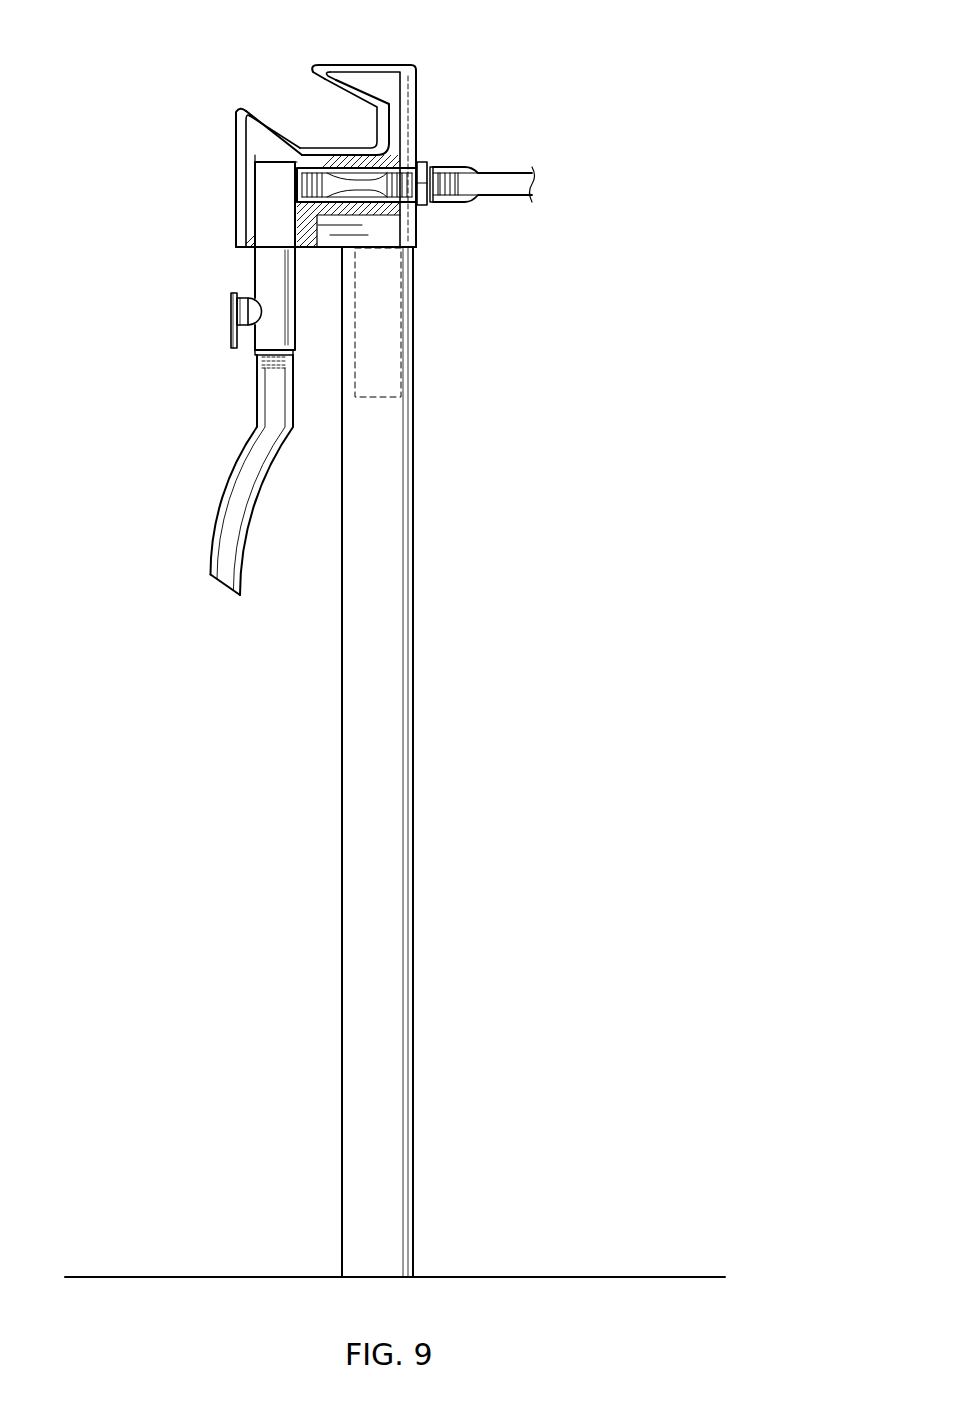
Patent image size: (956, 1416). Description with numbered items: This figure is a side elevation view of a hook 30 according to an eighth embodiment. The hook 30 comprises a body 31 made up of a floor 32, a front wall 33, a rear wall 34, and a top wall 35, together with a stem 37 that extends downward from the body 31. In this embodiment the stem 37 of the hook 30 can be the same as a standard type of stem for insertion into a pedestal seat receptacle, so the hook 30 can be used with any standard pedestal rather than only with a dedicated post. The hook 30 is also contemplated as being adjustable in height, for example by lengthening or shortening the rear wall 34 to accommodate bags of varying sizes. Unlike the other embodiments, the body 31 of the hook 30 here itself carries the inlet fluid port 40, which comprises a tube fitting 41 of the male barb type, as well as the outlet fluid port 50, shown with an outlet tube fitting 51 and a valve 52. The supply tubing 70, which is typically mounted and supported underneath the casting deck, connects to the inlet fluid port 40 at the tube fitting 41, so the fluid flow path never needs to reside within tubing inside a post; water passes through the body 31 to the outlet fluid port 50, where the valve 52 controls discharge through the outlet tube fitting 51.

The hook 30 is at (445, 83).
The body 31 is at (253, 130).
The floor 32 is at (352, 148).
The front wall 33 is at (270, 117).
The rear wall 34 is at (383, 123).
The top wall 35 is at (308, 68).
The stem 37 is at (388, 397).
The inlet fluid port 40 is at (451, 232).
The tube fitting 41 is at (458, 183).
The outlet fluid port 50 is at (178, 302).
The outlet tube fitting 51 is at (277, 365).
The valve 52 is at (228, 325).
The supply tubing 70 is at (510, 173).